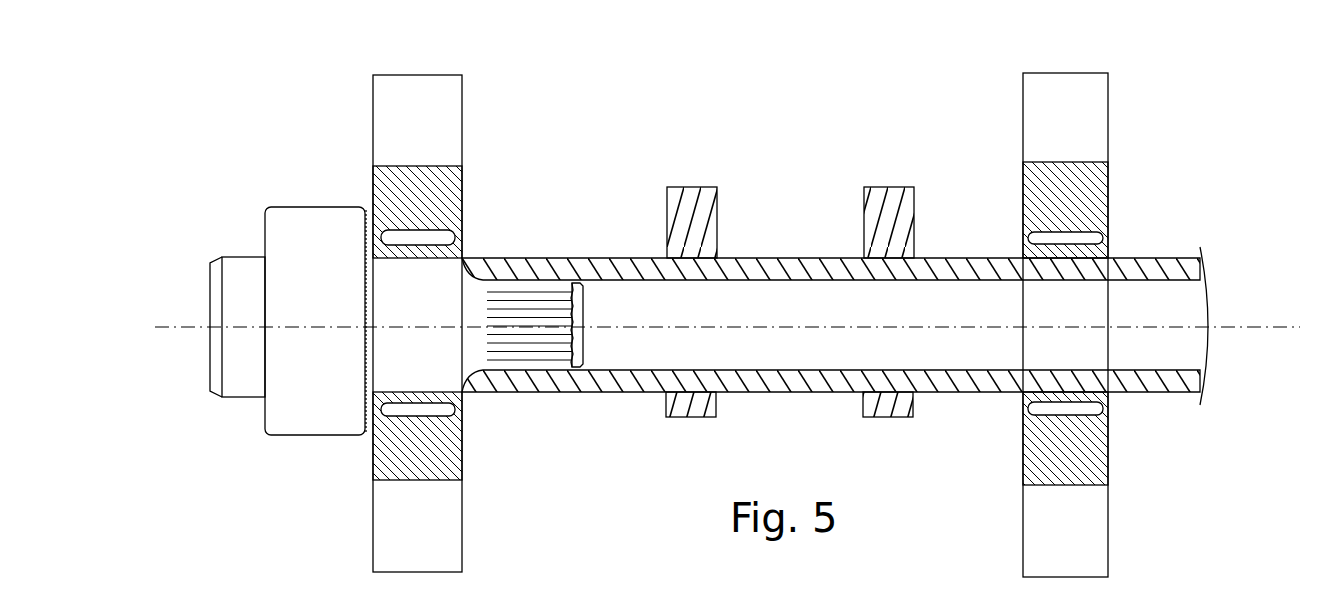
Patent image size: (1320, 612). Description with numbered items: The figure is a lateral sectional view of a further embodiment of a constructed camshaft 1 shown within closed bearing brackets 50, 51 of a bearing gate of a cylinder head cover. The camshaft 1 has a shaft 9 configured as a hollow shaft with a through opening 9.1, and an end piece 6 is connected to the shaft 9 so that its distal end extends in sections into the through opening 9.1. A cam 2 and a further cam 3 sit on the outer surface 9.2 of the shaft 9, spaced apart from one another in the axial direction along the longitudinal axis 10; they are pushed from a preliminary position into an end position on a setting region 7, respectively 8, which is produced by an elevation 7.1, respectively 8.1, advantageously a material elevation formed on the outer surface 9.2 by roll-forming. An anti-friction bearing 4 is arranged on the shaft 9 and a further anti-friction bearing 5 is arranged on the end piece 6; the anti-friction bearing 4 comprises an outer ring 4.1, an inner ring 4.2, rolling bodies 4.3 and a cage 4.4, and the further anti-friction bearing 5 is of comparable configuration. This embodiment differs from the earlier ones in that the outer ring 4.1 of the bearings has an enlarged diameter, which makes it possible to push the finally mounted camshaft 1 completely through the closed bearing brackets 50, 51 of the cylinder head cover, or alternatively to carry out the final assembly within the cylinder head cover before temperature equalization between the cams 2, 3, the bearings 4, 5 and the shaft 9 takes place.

The constructed camshaft 1 is at (611, 117).
The cam 2 is at (889, 187).
The further cam 3 is at (690, 187).
The anti-friction bearing 4 is at (1066, 324).
The outer ring 4.1 is at (1108, 485).
The inner ring 4.2 is at (1108, 397).
The rolling bodies 4.3 is at (1108, 411).
The cage 4.4 is at (1020, 410).
The further anti-friction bearing 5 is at (463, 201).
The end piece 6 is at (290, 217).
The setting region 7 is at (860, 428).
The elevation 7.1 is at (864, 399).
The setting region 8 is at (666, 429).
The elevation 8.1 is at (642, 414).
The shaft 9 is at (870, 354).
The through opening 9.1 is at (1196, 348).
The outer surface 9.2 is at (549, 396).
The longitudinal axis 10 is at (1243, 325).
The closed bearing bracket 50 is at (1066, 325).
The closed bearing bracket 51 is at (448, 323).